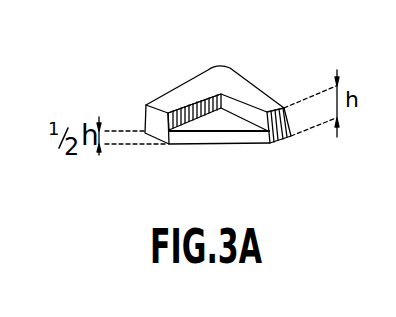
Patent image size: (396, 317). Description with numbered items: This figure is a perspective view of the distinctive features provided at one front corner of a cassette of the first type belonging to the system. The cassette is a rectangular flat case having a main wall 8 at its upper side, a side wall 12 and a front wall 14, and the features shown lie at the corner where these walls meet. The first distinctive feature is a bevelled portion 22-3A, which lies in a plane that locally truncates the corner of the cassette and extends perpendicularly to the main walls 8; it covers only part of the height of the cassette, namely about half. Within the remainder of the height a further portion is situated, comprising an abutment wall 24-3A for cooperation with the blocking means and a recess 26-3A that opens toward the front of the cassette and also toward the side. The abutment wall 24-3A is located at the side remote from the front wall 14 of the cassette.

The main wall 8 is at (227, 79).
The side wall 12 is at (157, 122).
The front wall 14 is at (287, 135).
The bevelled portion 22-3A is at (223, 145).
The abutment wall 24-3A is at (186, 110).
The recess 26-3A is at (218, 114).